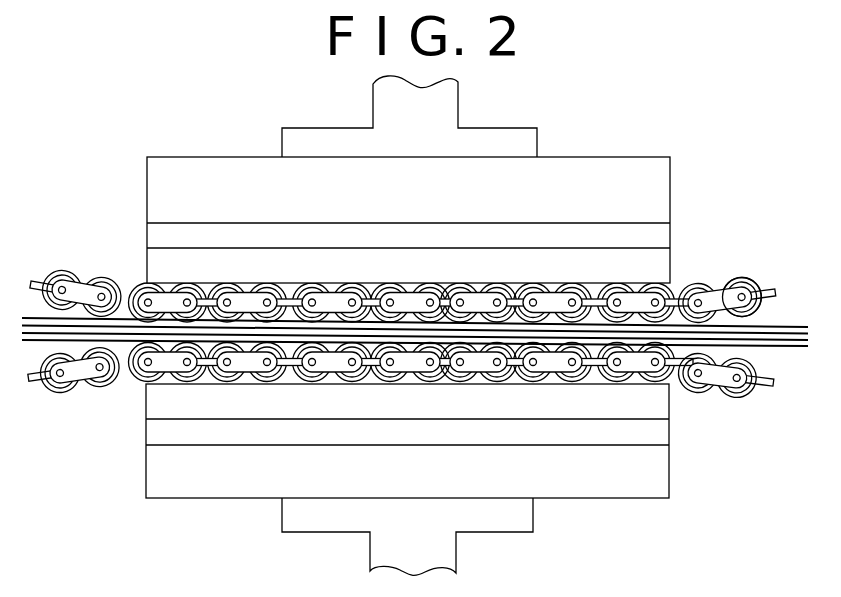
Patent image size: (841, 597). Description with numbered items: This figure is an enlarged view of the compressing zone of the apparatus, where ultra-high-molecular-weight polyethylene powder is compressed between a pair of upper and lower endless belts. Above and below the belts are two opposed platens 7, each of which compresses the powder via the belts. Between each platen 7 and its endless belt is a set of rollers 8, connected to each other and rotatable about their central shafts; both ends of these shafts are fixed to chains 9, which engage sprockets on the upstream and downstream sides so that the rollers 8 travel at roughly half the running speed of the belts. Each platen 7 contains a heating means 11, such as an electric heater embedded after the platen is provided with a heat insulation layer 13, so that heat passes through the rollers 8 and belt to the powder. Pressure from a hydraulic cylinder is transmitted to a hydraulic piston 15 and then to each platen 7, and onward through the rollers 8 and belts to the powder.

The platen 7 is at (445, 179).
The rollers 8 is at (740, 278).
The chains 9 is at (714, 380).
The heating means 11 is at (155, 266).
The heat insulation layer 13 is at (650, 238).
The hydraulic piston 15 is at (453, 103).